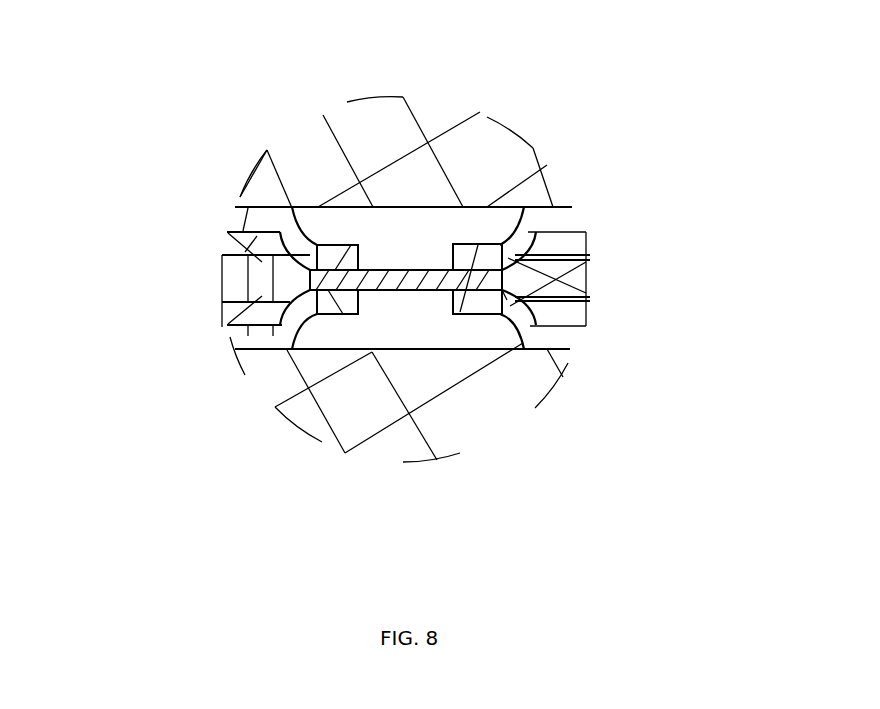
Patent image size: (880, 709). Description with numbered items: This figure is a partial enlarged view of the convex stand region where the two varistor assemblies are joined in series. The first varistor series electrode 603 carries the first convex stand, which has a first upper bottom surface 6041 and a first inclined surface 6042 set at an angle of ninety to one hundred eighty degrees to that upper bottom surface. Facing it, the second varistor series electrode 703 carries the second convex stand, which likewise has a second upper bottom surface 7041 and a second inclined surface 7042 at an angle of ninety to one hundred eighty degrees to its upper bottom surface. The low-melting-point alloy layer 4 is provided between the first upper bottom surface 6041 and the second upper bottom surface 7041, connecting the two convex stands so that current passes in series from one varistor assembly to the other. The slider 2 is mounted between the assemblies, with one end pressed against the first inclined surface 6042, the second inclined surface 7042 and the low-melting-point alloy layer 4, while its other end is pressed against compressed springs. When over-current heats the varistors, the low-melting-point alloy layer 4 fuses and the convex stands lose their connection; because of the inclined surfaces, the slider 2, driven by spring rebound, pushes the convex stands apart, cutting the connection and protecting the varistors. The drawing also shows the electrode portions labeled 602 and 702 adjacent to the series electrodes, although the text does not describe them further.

The slider 2 is at (502, 279).
The low-melting-point alloy layer 4 is at (310, 279).
The first hub 602 is at (318, 160).
The first varistor series electrode 603 is at (540, 222).
The first upper bottom surface 6041 is at (453, 243).
The first inclined surface 6042 is at (502, 268).
The first groove 702 is at (288, 382).
The second varistor series electrode 703 is at (530, 340).
The second upper bottom surface 7041 is at (490, 292).
The second inclined surface 7042 is at (507, 300).